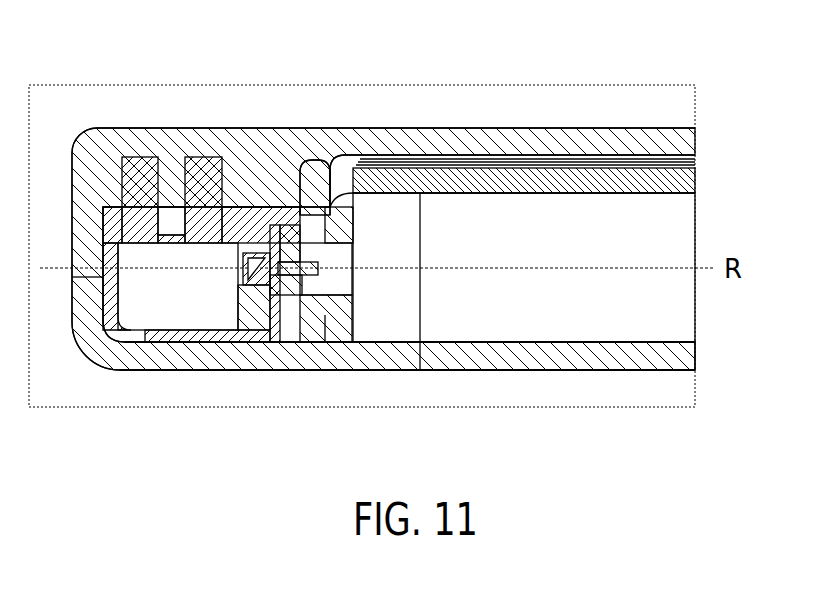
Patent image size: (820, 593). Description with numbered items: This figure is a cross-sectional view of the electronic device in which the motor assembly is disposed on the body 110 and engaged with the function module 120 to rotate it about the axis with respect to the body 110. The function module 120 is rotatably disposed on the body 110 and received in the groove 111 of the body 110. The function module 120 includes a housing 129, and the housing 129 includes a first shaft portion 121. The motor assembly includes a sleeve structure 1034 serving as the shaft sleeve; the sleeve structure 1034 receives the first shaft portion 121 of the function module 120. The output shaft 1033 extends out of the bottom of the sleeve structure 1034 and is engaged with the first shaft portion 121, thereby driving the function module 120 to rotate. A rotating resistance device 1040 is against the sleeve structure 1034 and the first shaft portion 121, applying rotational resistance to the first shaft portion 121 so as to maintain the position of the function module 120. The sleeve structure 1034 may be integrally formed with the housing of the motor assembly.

The body 110 is at (663, 128).
The groove 111 is at (594, 140).
The function module 120 is at (636, 396).
The first shaft portion 121 is at (290, 130).
The housing 129 is at (672, 356).
The output shaft 1033 is at (258, 300).
The sleeve structure 1034 is at (285, 335).
The rotating resistance device 1040 is at (275, 342).